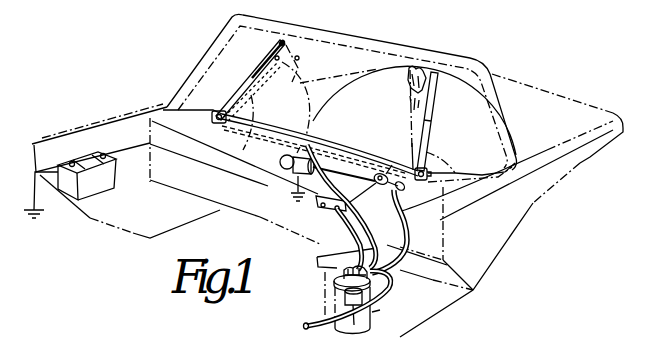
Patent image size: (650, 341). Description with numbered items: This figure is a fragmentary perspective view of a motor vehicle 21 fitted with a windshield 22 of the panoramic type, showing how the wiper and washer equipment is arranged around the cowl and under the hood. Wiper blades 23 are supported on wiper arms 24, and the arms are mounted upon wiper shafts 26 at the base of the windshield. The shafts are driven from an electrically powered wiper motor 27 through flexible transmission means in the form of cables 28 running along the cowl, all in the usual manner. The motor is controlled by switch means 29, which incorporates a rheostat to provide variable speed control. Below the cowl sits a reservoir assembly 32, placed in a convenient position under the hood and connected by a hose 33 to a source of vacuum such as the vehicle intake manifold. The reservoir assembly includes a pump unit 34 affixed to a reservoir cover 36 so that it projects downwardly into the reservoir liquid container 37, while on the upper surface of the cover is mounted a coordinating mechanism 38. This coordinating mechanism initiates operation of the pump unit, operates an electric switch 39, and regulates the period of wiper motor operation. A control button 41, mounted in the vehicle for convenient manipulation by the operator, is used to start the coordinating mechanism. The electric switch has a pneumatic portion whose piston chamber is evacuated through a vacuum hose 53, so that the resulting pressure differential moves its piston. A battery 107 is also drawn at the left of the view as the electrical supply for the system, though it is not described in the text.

The motor vehicle 21 is at (505, 193).
The windshield 22 is at (355, 64).
The wiper blades 23 is at (268, 54).
The wiper arms 24 is at (242, 84).
The wiper shafts 26 is at (213, 118).
The wiper motor 27 is at (293, 166).
The cables 28 is at (251, 146).
The switch means 29 is at (412, 172).
The reservoir assembly 32 is at (373, 323).
The hose 33 is at (325, 319).
The pump unit 34 is at (345, 297).
The reservoir cover 36 is at (372, 284).
The reservoir liquid container 37 is at (382, 316).
The coordinating mechanism 38 is at (343, 275).
The electric switch 39 is at (318, 203).
The control button 41 is at (403, 222).
The vacuum hose 53 is at (334, 230).
The battery 107 is at (93, 191).